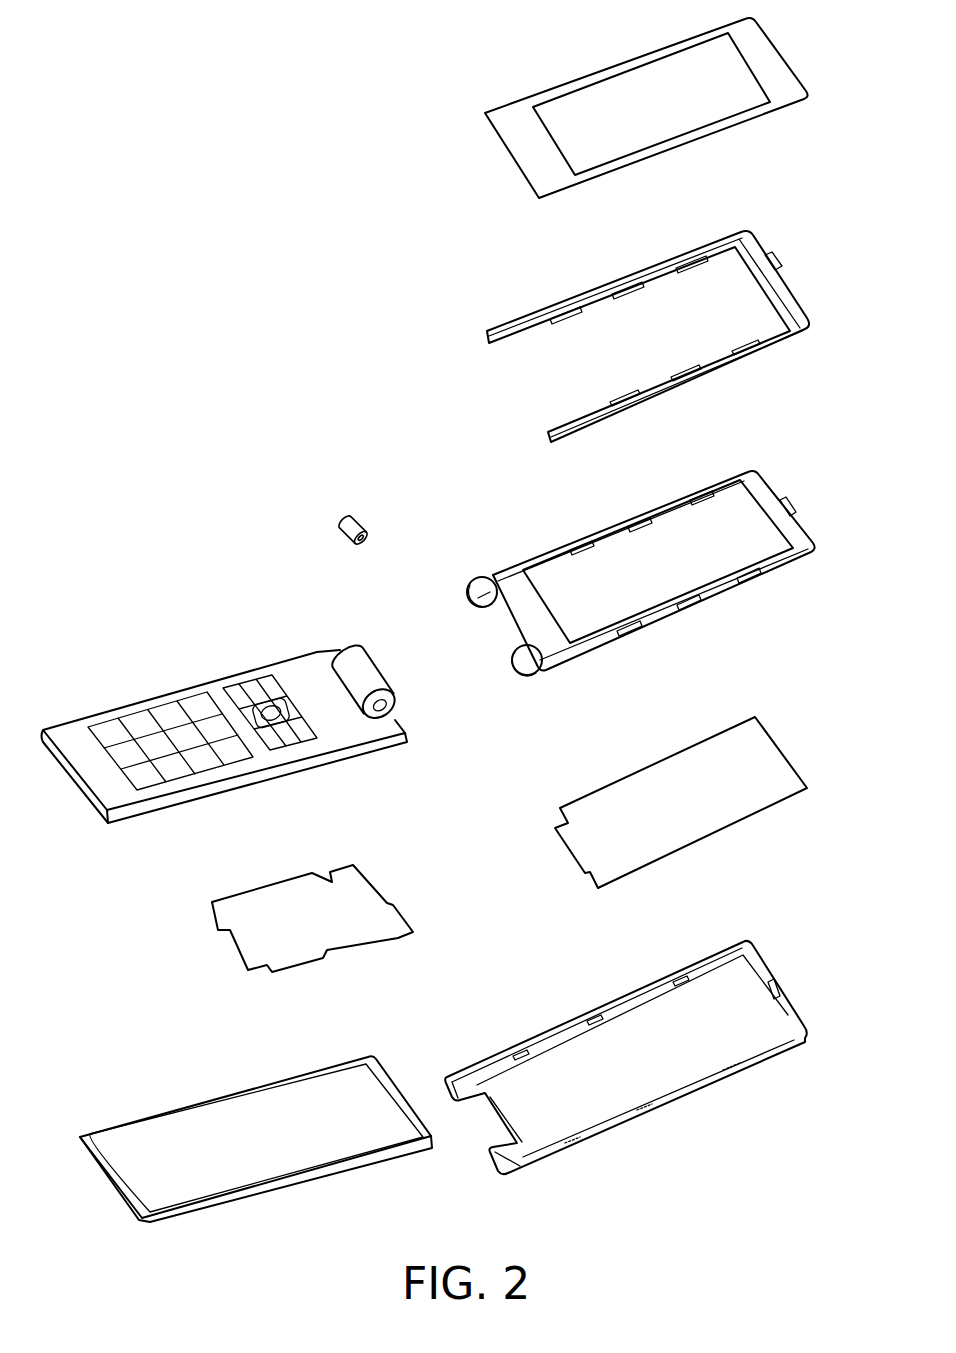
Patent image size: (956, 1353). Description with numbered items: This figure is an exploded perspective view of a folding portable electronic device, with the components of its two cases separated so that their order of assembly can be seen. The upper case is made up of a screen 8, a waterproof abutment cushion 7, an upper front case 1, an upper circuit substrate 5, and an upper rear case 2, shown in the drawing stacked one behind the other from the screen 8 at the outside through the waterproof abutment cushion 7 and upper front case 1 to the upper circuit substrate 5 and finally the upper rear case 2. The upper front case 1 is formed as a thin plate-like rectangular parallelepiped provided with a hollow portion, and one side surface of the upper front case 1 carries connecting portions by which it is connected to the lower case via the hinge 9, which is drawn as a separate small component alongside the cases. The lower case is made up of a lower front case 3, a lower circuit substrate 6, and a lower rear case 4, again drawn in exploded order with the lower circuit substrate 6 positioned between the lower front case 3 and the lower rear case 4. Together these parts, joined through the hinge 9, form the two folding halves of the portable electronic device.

The upper front case 1 is at (800, 522).
The upper rear case 2 is at (788, 993).
The lower front case 3 is at (183, 688).
The lower rear case 4 is at (220, 1095).
The upper circuit substrate 5 is at (785, 755).
The lower circuit substrate 6 is at (212, 907).
The waterproof abutment cushion 7 is at (788, 292).
The screen 8 is at (793, 67).
The hinge 9 is at (348, 515).